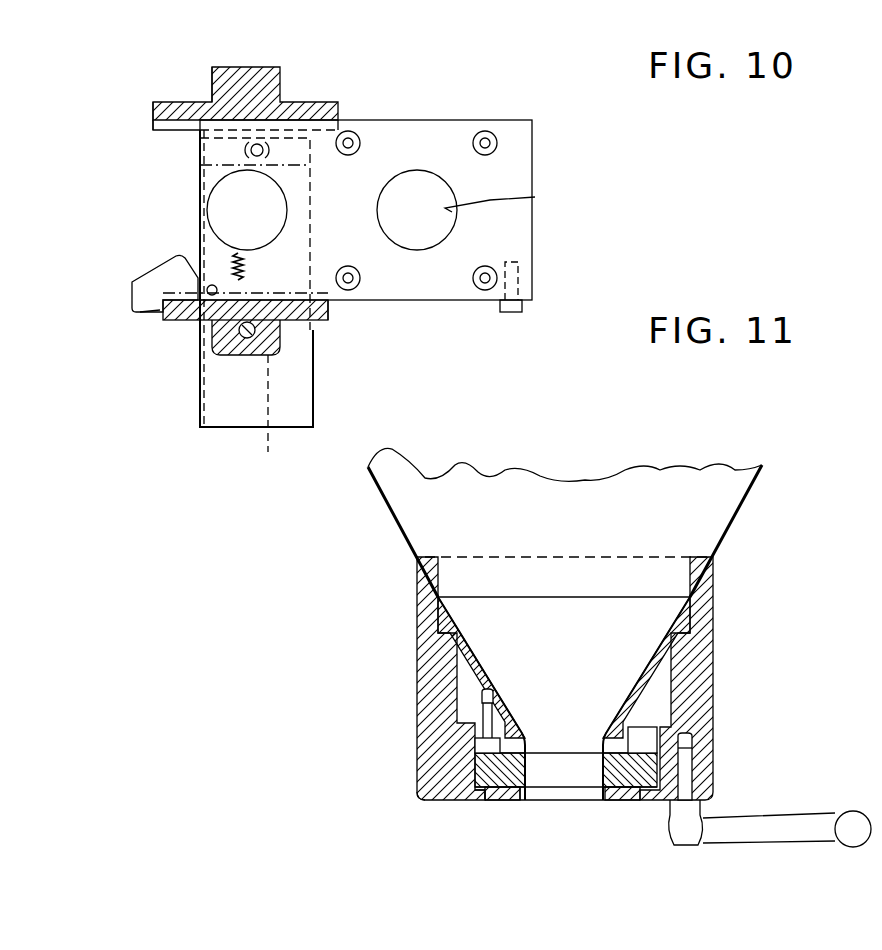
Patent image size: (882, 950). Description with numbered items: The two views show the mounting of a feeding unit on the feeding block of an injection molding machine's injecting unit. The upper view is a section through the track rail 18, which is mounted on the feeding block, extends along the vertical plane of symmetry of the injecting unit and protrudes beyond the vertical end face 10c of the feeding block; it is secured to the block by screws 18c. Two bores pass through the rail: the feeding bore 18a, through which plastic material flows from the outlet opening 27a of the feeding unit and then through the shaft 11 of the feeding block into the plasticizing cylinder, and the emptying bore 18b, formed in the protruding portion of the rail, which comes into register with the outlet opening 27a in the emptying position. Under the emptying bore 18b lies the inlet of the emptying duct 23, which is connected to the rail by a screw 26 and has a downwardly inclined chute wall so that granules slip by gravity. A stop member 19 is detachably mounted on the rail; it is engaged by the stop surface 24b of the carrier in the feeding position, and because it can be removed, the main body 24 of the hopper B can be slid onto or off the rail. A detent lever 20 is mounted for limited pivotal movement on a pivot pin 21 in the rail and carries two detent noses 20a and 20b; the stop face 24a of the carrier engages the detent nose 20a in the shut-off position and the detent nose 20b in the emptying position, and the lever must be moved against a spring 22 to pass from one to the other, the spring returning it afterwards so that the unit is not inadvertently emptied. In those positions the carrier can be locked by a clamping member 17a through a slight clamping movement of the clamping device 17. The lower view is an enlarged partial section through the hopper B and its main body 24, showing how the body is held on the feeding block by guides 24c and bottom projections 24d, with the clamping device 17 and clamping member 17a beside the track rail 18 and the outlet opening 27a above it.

In FIG. 10, the vertical end face 10c is at (314, 247).
In FIG. 10, the shaft 11 is at (422, 197).
In FIG. 10, the clamping device 17 is at (244, 340).
In FIG. 11, the clamping device 17 is at (765, 825).
In FIG. 10, the clamping member 17a is at (274, 418).
In FIG. 11, the clamping member 17a is at (666, 796).
In FIG. 10, the track rail 18 is at (540, 127).
In FIG. 11, the track rail 18 is at (505, 780).
In FIG. 10, the feeding bore 18a is at (515, 198).
In FIG. 10, the emptying bore 18b is at (260, 207).
In FIG. 10, the screws 18c is at (493, 134).
In FIG. 10, the stop member 19 is at (515, 312).
In FIG. 10, the detent lever 20 is at (130, 295).
In FIG. 10, the detent nose 20a is at (313, 336).
In FIG. 10, the detent nose 20b is at (155, 312).
In FIG. 10, the pivot pin 21 is at (208, 298).
In FIG. 10, the spring 22 is at (250, 265).
In FIG. 10, the emptying duct 23 is at (300, 392).
In FIG. 10, the main body 24 is at (338, 98).
In FIG. 11, the main body 24 is at (715, 668).
In FIG. 10, the stop face 24a is at (175, 322).
In FIG. 10, the stop surface 24b is at (332, 315).
In FIG. 10, the guide 24c is at (148, 128).
In FIG. 11, the guide 24c is at (426, 800).
In FIG. 10, the bottom projections 24d is at (180, 118).
In FIG. 11, the bottom projections 24d is at (480, 795).
In FIG. 10, the screw 26 is at (262, 140).
In FIG. 11, the outlet opening 27a is at (560, 773).
In FIG. 11, the hopper B is at (578, 478).